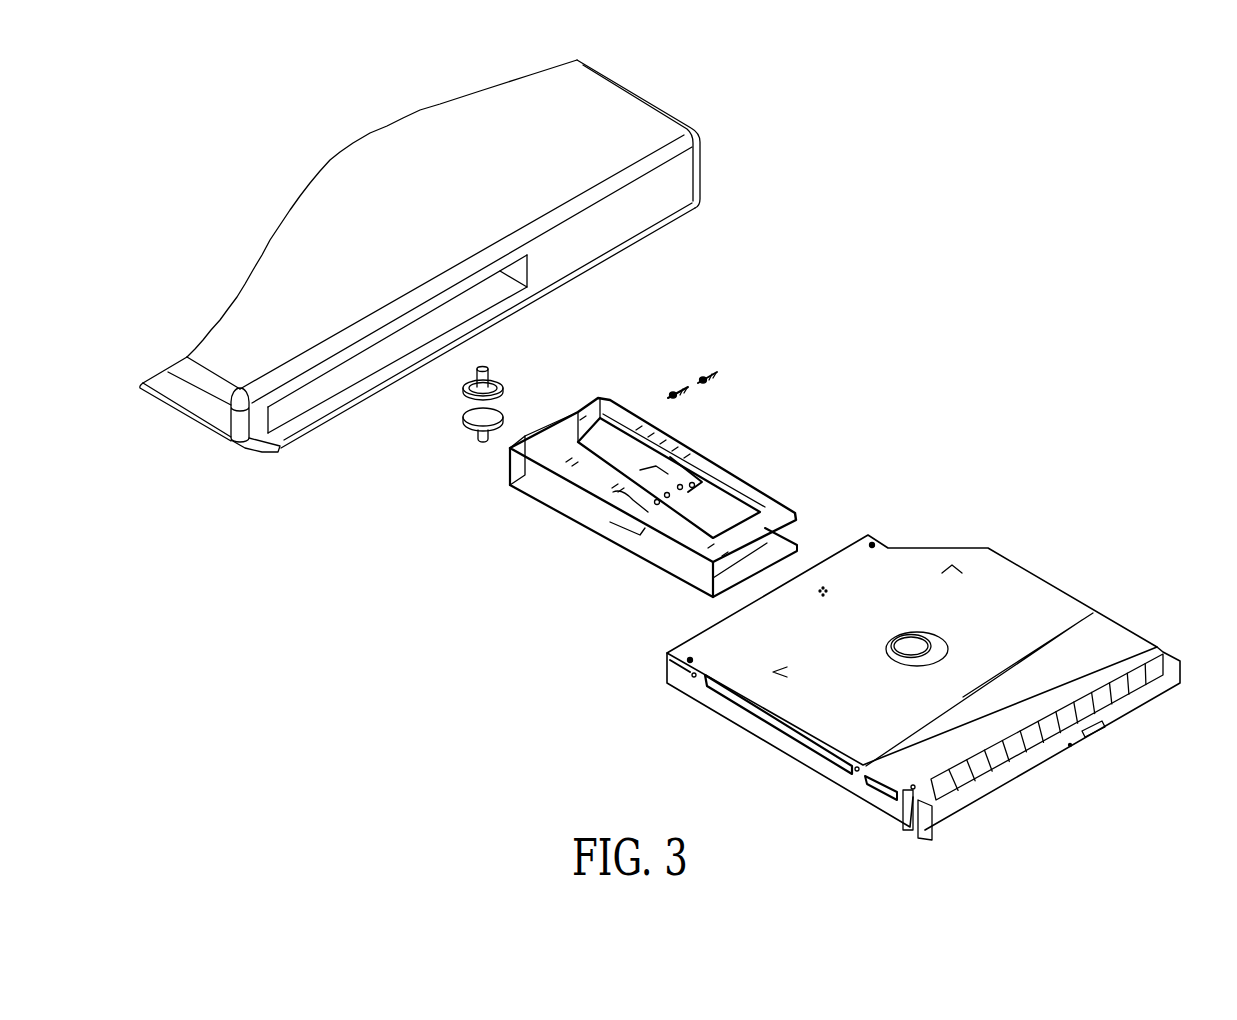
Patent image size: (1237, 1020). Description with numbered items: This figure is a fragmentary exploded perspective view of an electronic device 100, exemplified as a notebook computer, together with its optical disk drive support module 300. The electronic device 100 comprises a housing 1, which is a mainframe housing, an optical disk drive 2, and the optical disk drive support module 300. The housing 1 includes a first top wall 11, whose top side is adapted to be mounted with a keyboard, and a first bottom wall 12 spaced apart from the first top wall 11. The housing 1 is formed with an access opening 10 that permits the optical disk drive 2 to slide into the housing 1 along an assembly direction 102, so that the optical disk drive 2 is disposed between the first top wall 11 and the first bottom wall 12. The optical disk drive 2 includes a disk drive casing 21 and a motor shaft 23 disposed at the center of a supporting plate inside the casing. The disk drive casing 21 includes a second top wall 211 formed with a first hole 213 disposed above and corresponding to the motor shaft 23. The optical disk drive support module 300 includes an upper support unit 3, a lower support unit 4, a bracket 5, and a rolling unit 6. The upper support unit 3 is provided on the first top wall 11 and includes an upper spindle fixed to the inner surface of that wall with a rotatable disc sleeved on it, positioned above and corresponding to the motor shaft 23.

The housing 1 is at (471, 273).
The access opening 10 is at (506, 278).
The first top wall 11 is at (372, 340).
The first bottom wall 12 is at (372, 385).
The electronic device 100 is at (979, 270).
The assembly direction 102 is at (487, 572).
The optical disk drive 2 is at (937, 670).
The disk drive casing 21 is at (1026, 594).
The second top wall 211 is at (1113, 652).
The first hole 213 is at (943, 650).
The motor shaft 23 is at (906, 638).
The upper support unit 3 is at (488, 378).
The optical disk drive support module 300 is at (715, 482).
The lower support unit 4 is at (479, 429).
The bracket 5 is at (754, 496).
The rolling unit 6 is at (727, 346).